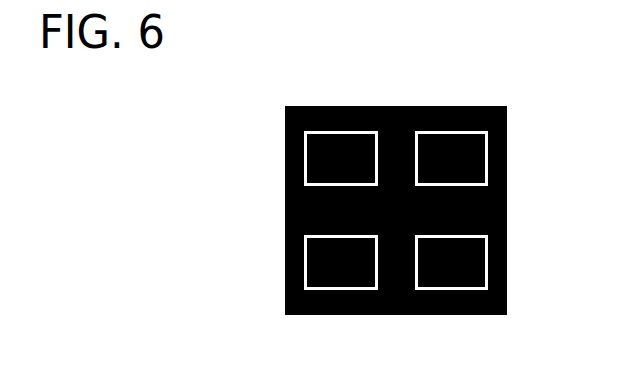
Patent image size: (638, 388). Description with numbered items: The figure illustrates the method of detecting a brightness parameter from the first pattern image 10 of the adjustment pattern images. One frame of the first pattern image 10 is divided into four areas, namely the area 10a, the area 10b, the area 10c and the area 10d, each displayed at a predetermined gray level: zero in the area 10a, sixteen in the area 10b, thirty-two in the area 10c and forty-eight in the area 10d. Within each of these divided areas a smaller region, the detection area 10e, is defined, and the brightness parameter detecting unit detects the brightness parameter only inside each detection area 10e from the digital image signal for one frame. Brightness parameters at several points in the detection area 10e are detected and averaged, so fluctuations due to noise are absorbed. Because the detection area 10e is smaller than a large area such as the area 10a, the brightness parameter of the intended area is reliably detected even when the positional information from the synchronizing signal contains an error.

The first pattern image 10 is at (378, 78).
The area 10a is at (308, 98).
The area 10b is at (463, 98).
The area 10c is at (310, 307).
The area 10d is at (447, 307).
The detection area 10e is at (478, 257).